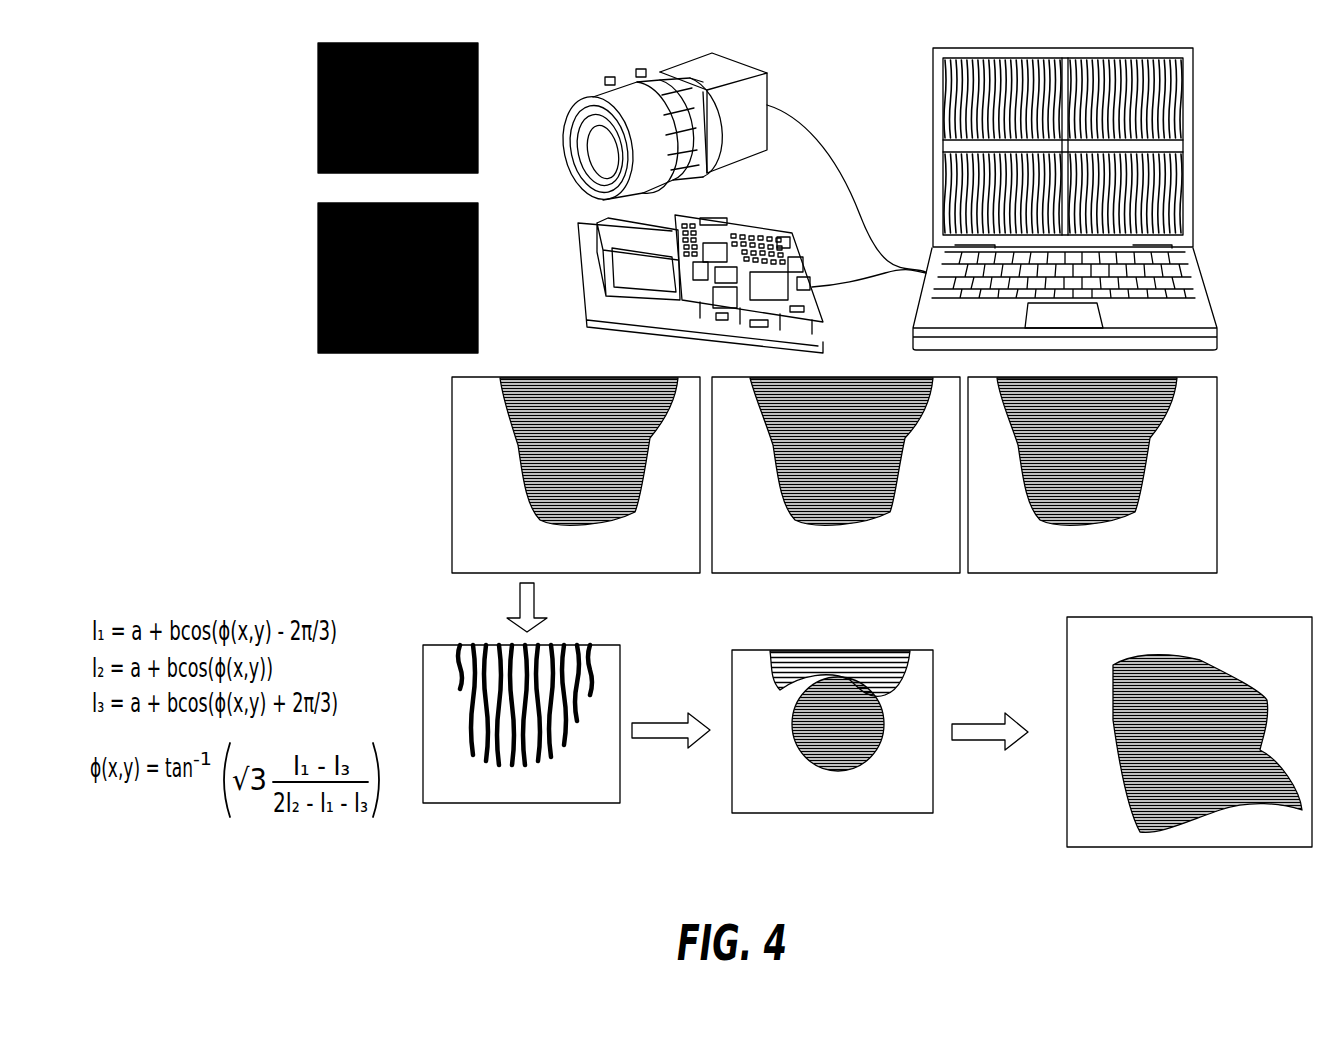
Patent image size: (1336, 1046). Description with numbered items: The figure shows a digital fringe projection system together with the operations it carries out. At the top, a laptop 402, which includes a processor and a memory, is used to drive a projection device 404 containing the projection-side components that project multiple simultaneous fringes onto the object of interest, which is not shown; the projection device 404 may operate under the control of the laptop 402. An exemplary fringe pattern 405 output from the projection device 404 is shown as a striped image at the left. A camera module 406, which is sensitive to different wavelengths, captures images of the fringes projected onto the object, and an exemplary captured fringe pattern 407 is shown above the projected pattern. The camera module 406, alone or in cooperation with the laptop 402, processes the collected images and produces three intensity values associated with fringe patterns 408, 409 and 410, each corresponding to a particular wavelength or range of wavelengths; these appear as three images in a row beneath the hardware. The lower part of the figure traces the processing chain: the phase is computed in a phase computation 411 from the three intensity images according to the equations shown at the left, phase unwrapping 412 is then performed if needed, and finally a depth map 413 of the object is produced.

The laptop 402 is at (1195, 313).
The projection device 404 is at (760, 233).
The fringe pattern 405 is at (317, 279).
The camera module 406 is at (753, 112).
The fringe pattern 407 is at (317, 93).
The fringe pattern 408 is at (600, 573).
The fringe pattern 409 is at (803, 573).
The fringe pattern 410 is at (1047, 573).
The phase computation 411 is at (415, 588).
The phase unwrapping 412 is at (673, 847).
The depth map 413 is at (987, 853).